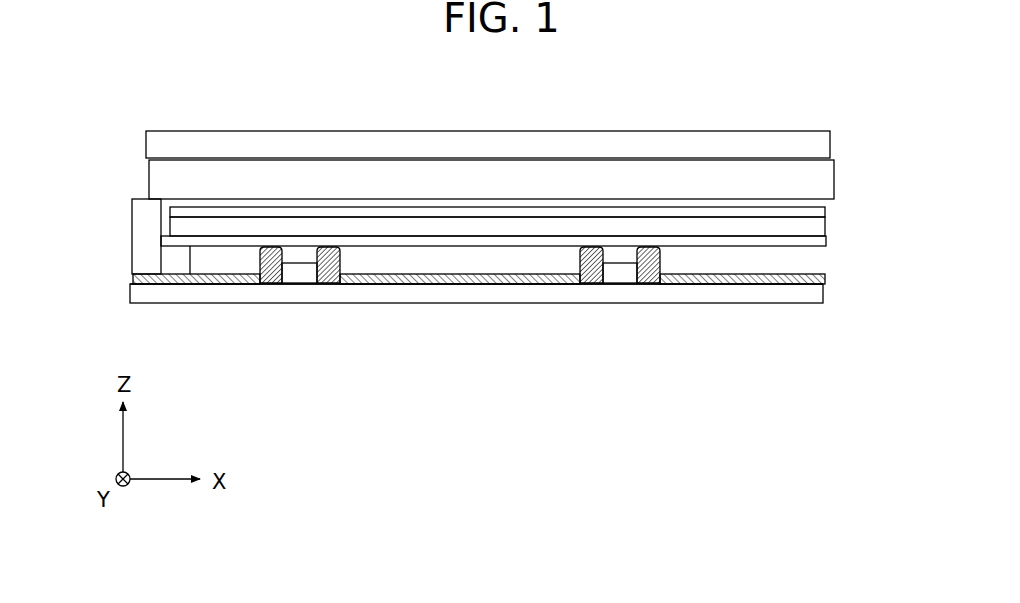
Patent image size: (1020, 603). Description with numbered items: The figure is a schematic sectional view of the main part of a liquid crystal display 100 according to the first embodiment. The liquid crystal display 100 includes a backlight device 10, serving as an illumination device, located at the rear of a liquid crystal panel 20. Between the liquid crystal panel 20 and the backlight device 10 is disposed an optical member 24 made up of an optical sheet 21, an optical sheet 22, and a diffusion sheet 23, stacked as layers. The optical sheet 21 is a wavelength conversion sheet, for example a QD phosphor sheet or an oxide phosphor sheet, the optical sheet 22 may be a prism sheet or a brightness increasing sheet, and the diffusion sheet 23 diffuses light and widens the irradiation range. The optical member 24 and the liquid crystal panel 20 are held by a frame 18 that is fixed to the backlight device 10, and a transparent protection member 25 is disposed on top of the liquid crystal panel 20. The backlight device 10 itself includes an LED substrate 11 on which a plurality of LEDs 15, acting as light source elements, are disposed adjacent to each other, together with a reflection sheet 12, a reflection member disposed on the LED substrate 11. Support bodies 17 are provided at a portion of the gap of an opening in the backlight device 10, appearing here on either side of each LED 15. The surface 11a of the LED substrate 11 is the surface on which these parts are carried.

The liquid crystal display 100 is at (706, 118).
The backlight device 10 is at (130, 246).
The LED substrate 11 is at (495, 298).
The surface of substrate 11a is at (538, 284).
The reflection sheet 12 is at (200, 277).
The LED 15 is at (296, 272).
The support body 17 is at (268, 277).
The frame 18 is at (140, 228).
The liquid crystal panel 20 is at (457, 181).
The optical sheet 21 is at (826, 243).
The optical sheet 22 is at (825, 210).
The diffusion sheet 23 is at (815, 228).
The optical member 24 is at (898, 176).
The transparent protection member 25 is at (327, 146).